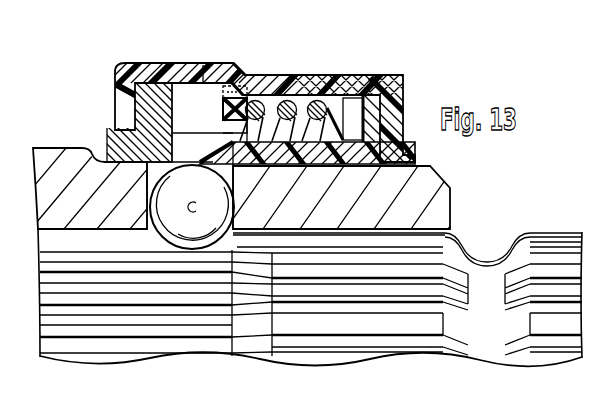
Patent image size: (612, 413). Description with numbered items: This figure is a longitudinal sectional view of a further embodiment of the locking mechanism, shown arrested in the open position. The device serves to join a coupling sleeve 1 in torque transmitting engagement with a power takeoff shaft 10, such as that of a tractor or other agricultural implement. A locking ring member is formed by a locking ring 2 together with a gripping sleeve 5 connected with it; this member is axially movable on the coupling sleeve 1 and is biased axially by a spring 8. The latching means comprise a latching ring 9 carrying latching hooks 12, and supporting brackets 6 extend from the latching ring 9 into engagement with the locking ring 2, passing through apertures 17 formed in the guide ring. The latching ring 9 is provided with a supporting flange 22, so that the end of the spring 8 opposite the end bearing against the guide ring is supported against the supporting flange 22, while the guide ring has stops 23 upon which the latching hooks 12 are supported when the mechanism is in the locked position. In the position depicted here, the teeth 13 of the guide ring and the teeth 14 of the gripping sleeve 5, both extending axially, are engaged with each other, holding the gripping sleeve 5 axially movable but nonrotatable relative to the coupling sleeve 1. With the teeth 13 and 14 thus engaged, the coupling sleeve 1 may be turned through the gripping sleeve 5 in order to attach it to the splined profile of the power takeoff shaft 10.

The coupling sleeve 1 is at (67, 142).
The locking ring 2 is at (145, 120).
The gripping sleeve 5 is at (163, 68).
The supporting brackets 6 is at (180, 136).
The spring 8 is at (289, 99).
The latching ring 9 is at (190, 195).
The power takeoff shaft 10 is at (328, 328).
The latching hooks 12 is at (245, 85).
The teeth 13 is at (238, 73).
The teeth 14 is at (218, 90).
The apertures 17 is at (229, 125).
The supporting flange 22 is at (336, 100).
The stops 23 is at (300, 166).